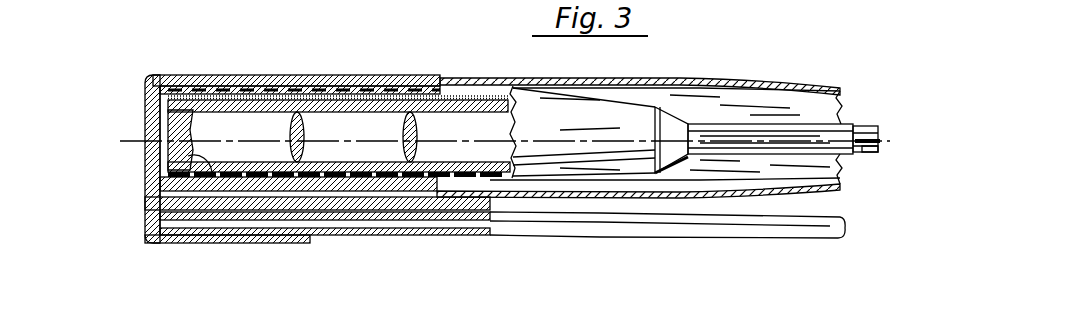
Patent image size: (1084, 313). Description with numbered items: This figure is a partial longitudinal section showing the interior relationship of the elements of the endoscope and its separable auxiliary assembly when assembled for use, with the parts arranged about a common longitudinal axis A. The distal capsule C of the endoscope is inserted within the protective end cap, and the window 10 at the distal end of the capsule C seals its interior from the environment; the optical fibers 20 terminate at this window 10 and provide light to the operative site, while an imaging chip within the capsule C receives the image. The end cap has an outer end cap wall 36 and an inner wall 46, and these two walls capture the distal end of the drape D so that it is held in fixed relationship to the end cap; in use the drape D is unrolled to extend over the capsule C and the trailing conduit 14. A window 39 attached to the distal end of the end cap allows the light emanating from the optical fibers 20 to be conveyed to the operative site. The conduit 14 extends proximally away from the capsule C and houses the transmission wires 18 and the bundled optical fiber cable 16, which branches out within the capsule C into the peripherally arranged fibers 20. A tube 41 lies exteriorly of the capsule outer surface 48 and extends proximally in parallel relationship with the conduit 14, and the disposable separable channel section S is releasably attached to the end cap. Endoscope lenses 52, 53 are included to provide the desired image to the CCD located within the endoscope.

The window 10 is at (165, 128).
The conduit 14 is at (763, 128).
The bundled optical fiber cable 16 is at (865, 152).
The transmission wires 18 is at (862, 125).
The optical fibers 20 is at (353, 77).
The outer end cap wall 36 is at (218, 75).
The window 39 is at (150, 98).
The tube 41 is at (615, 226).
The inner wall 46 is at (288, 80).
The capsule outer surface 48 is at (540, 118).
The endoscope lens 52 is at (165, 162).
The endoscope lens 53 is at (212, 172).
The longitudinal axis A is at (507, 141).
The capsule C is at (638, 97).
The drape D is at (705, 78).
The separable channel section S is at (275, 246).